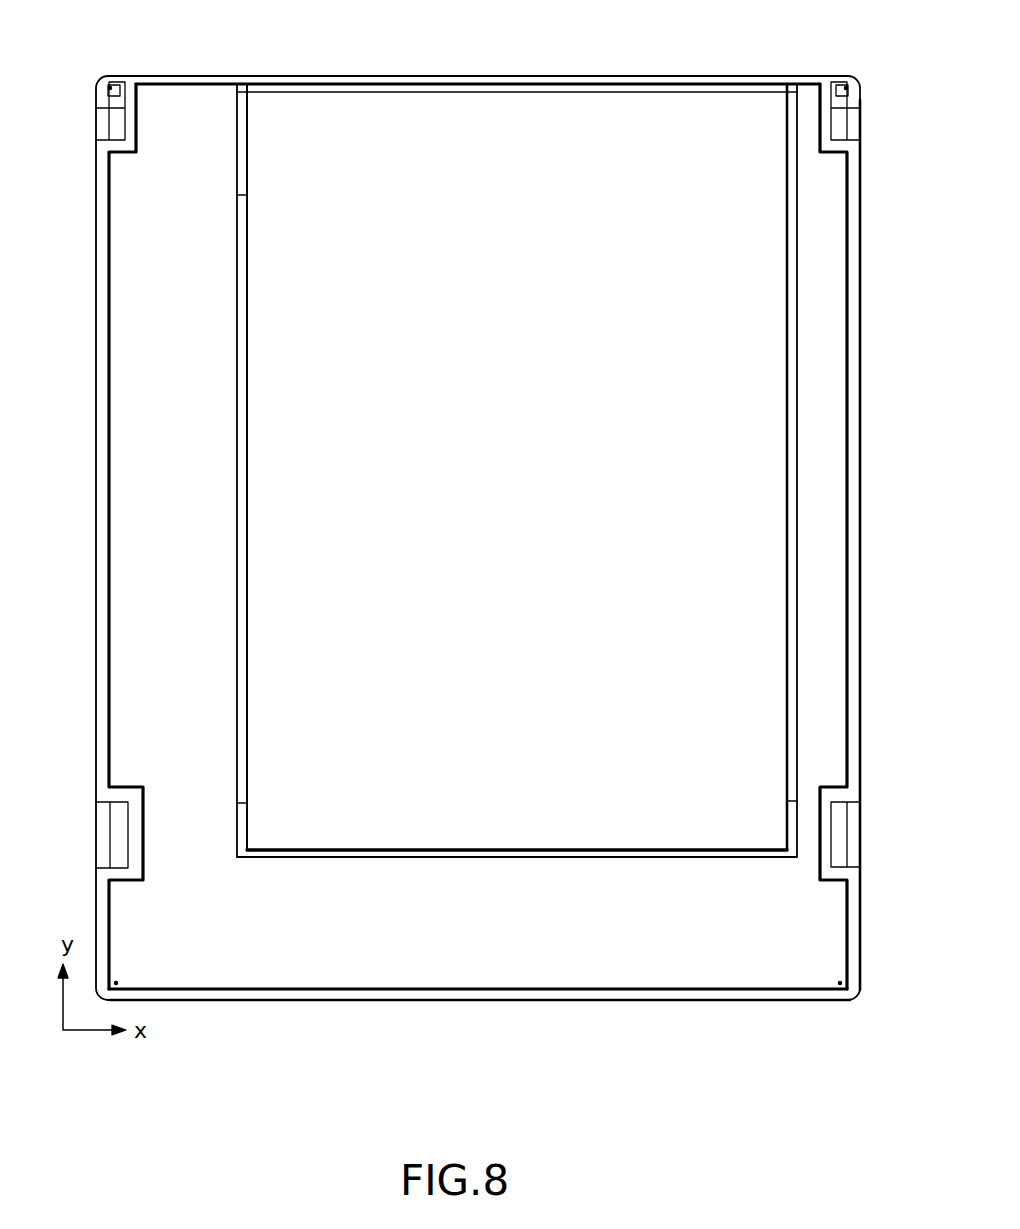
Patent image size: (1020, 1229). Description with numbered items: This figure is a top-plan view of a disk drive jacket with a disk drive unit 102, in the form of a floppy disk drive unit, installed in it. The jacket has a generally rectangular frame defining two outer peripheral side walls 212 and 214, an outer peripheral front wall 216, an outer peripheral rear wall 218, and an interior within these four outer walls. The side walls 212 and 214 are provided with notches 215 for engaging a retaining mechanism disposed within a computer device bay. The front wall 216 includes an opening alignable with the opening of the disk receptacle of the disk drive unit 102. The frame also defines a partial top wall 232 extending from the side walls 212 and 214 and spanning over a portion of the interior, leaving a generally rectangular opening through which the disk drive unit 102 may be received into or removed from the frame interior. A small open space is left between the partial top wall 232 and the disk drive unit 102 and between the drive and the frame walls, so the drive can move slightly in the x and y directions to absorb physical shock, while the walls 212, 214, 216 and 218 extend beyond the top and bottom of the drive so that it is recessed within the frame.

The disk drive unit 102 is at (498, 487).
The outer peripheral side wall 212 is at (862, 422).
The outer peripheral side wall 214 is at (102, 587).
The notches 215 is at (120, 842).
The outer peripheral front wall 216 is at (503, 74).
The outer peripheral rear wall 218 is at (503, 1002).
The partial top wall 232 is at (525, 925).